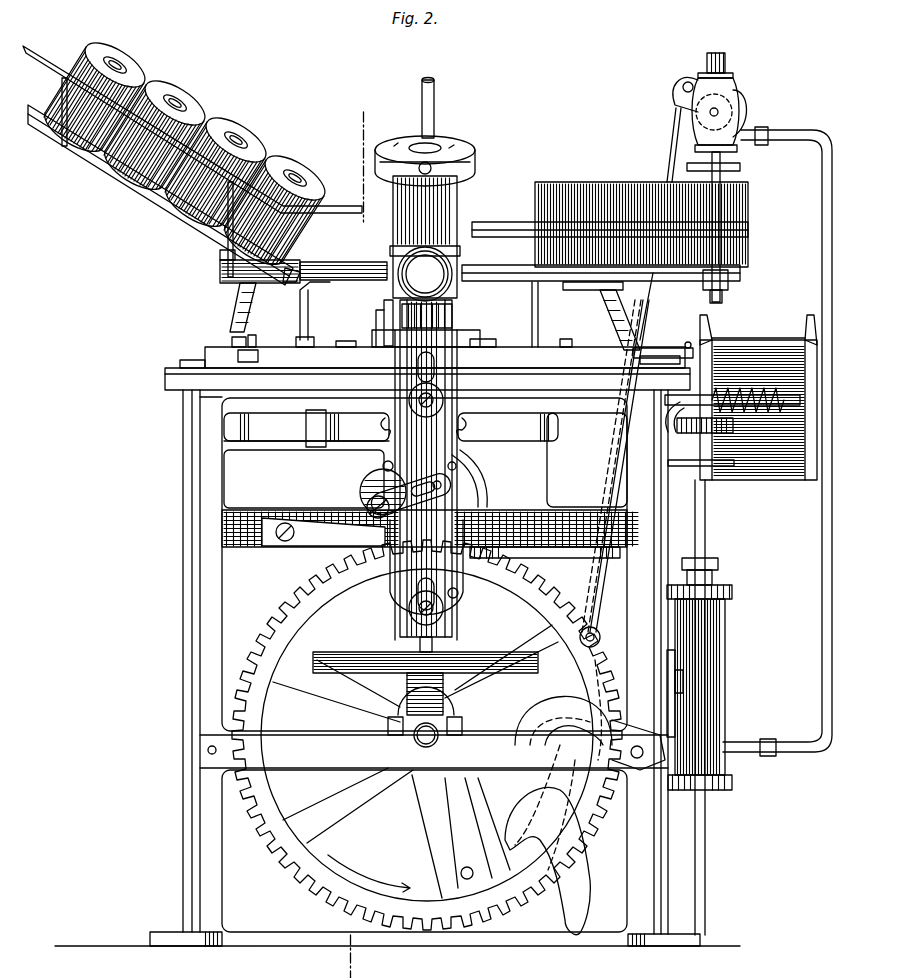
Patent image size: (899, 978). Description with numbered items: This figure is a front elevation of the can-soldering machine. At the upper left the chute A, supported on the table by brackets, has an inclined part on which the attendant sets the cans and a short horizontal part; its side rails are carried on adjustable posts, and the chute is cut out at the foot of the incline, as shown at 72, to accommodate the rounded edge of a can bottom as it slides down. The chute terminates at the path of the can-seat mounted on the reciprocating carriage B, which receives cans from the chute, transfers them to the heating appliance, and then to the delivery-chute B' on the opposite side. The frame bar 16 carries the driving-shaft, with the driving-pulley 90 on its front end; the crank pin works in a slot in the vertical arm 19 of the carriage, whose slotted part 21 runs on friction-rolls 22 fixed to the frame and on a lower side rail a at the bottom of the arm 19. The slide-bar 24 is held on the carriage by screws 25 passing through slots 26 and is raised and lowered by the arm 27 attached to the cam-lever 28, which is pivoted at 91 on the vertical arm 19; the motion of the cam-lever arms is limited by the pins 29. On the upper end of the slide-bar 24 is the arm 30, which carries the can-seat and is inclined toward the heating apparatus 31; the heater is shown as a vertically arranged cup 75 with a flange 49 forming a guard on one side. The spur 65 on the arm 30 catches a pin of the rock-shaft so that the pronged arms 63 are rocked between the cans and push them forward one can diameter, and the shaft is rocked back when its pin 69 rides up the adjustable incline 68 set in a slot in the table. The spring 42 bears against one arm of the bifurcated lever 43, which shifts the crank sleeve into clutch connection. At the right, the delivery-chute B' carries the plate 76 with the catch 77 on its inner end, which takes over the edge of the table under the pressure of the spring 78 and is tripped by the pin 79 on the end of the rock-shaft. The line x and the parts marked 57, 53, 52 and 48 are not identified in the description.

The chute A is at (192, 159).
The axis line x is at (358, 536).
The rod 57 is at (434, 100).
The disc 53 is at (458, 140).
The rim 52 is at (472, 164).
The cut-out of chute 72 is at (296, 268).
The flange 49 is at (396, 250).
The support bar 48 is at (378, 264).
The heating apparatus 31 is at (456, 264).
The cup 75 is at (425, 274).
The carriage B is at (420, 318).
The spur 65 is at (384, 312).
The arm 30 is at (446, 330).
The pronged arms 63 is at (396, 314).
The pin 69 is at (252, 335).
The incline 68 is at (254, 356).
The pin 79 is at (690, 346).
The delivery-chute B' is at (758, 397).
The spring 78 is at (740, 396).
The catch 77 is at (668, 428).
The plate 76 is at (696, 434).
The screws 25 is at (444, 400).
The slotted part of carriage 21 is at (306, 427).
The friction-rolls 22 is at (401, 459).
The cam-lever 28 is at (384, 464).
The vertical arm 19 is at (374, 490).
The pivot 91 is at (370, 503).
The slide-bar 24 is at (426, 470).
The pins 29 is at (456, 466).
The arm 27 is at (450, 490).
The driving-pulley 90 is at (482, 480).
The bar of frame 16 is at (430, 517).
The spring 42 is at (330, 541).
The bifurcated lever 43 is at (540, 556).
The slots 26 is at (412, 584).
The lower side rail a is at (507, 656).